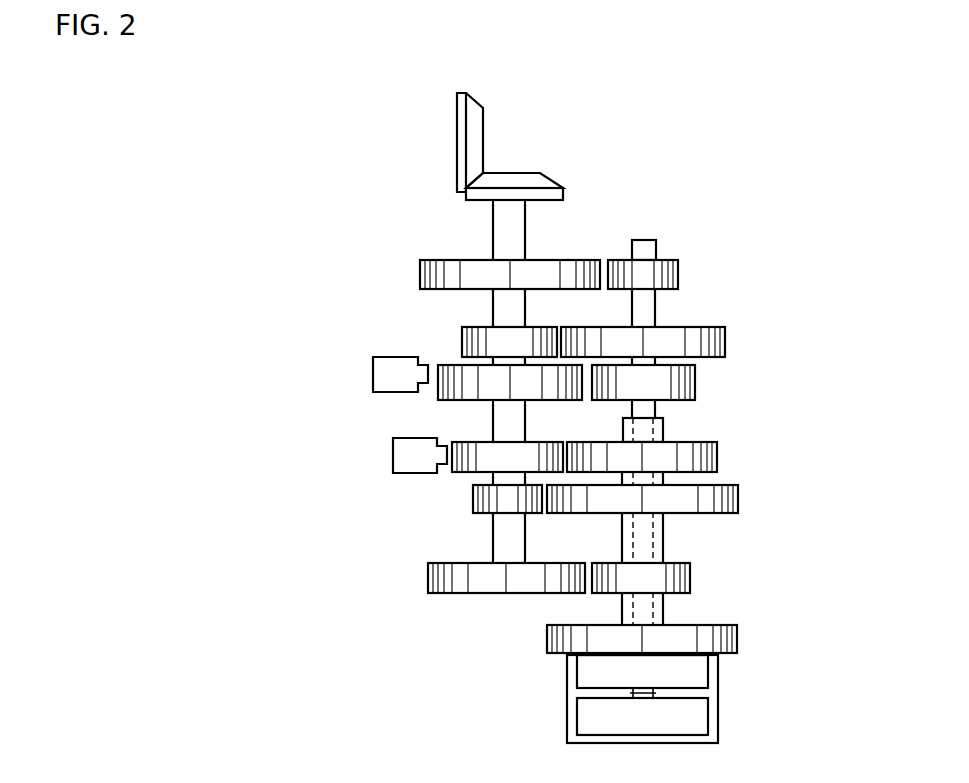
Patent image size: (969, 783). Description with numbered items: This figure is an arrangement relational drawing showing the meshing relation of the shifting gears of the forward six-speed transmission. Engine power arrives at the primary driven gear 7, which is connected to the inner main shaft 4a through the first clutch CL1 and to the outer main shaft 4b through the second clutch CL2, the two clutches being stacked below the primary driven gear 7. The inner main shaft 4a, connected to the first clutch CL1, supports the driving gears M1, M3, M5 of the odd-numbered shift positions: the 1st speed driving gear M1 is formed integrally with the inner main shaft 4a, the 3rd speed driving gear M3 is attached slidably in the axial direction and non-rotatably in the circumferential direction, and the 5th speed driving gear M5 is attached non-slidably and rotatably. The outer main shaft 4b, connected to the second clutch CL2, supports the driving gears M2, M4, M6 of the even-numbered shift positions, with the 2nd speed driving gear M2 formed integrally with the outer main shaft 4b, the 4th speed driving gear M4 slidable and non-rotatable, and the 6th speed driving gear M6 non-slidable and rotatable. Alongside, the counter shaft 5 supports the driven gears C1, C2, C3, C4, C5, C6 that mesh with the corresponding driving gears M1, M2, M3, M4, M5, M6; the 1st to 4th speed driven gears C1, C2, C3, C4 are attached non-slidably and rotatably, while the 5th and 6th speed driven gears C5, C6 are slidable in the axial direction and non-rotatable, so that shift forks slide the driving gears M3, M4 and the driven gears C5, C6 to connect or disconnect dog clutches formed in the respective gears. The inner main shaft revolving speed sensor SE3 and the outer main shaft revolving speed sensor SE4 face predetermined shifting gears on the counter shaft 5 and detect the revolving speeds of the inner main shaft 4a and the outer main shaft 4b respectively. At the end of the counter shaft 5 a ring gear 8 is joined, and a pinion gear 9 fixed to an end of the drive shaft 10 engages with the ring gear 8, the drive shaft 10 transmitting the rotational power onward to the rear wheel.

The inner main shaft 4a is at (645, 247).
The outer main shaft 4b is at (663, 425).
The counter shaft 5 is at (493, 546).
The primary driven gear 7 is at (550, 655).
The ring gear 8 is at (537, 178).
The pinion gear 9 is at (478, 120).
The drive shaft 10 is at (457, 123).
The 1st speed driven gear C1 is at (420, 275).
The 2nd speed driven gear C2 is at (428, 578).
The 3rd speed driven gear C3 is at (433, 393).
The 4th speed driven gear C4 is at (478, 442).
The 5th speed driven gear C5 is at (462, 341).
The 6th speed driven gear C6 is at (473, 500).
The 1st speed driving gear M1 is at (678, 272).
The 2nd speed driving gear M2 is at (690, 578).
The 3rd speed driving gear M3 is at (695, 377).
The 4th speed driving gear M4 is at (717, 452).
The 5th speed driving gear M5 is at (725, 337).
The 6th speed driving gear M6 is at (738, 497).
The inner main shaft revolving speed sensor SE3 is at (373, 375).
The outer main shaft revolving speed sensor SE4 is at (393, 456).
The first clutch CL1 is at (705, 713).
The second clutch CL2 is at (705, 668).